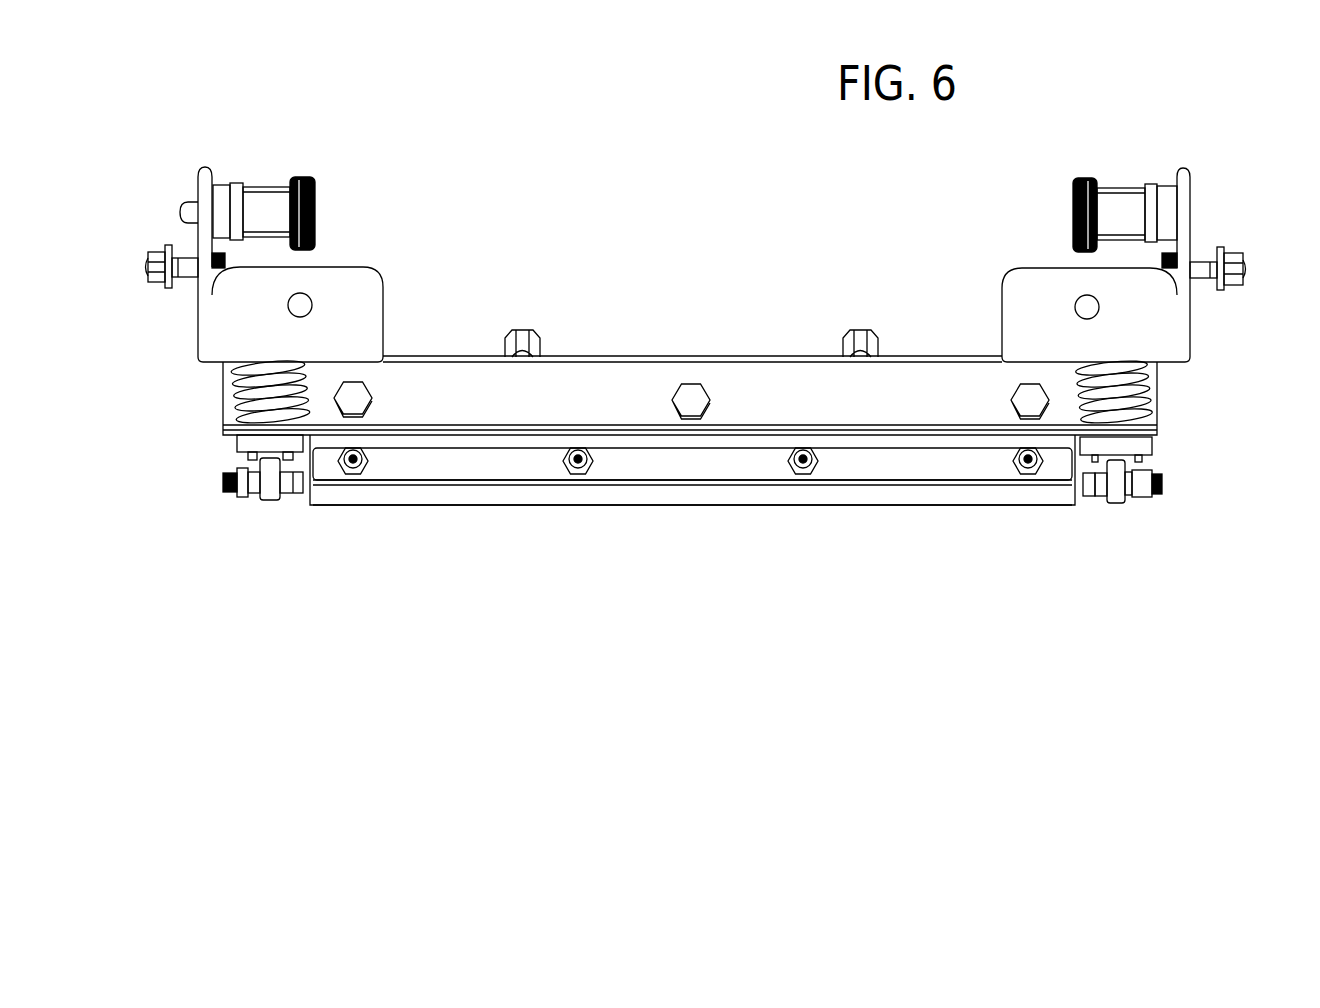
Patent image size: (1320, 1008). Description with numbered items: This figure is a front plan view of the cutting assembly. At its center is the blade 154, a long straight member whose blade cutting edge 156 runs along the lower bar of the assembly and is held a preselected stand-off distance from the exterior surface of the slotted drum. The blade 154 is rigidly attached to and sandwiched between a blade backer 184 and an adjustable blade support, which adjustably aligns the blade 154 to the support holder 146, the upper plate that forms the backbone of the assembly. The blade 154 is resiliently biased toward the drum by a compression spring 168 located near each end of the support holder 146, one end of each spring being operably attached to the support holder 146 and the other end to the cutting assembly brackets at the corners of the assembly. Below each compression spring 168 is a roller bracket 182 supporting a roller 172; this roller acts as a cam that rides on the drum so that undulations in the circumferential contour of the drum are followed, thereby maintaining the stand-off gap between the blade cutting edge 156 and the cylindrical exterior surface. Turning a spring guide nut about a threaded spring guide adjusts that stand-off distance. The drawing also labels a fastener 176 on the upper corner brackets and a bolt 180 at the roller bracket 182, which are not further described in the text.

The support holder 146 is at (605, 357).
The blade 154 is at (970, 510).
The blade cutting edge 156 is at (492, 498).
The compression spring 168 is at (295, 395).
The roller 172 is at (1123, 498).
The guide bolt 176 is at (315, 185).
The bolt 180 is at (1160, 490).
The roller bracket 182 is at (1130, 465).
The blade backer 184 is at (997, 483).